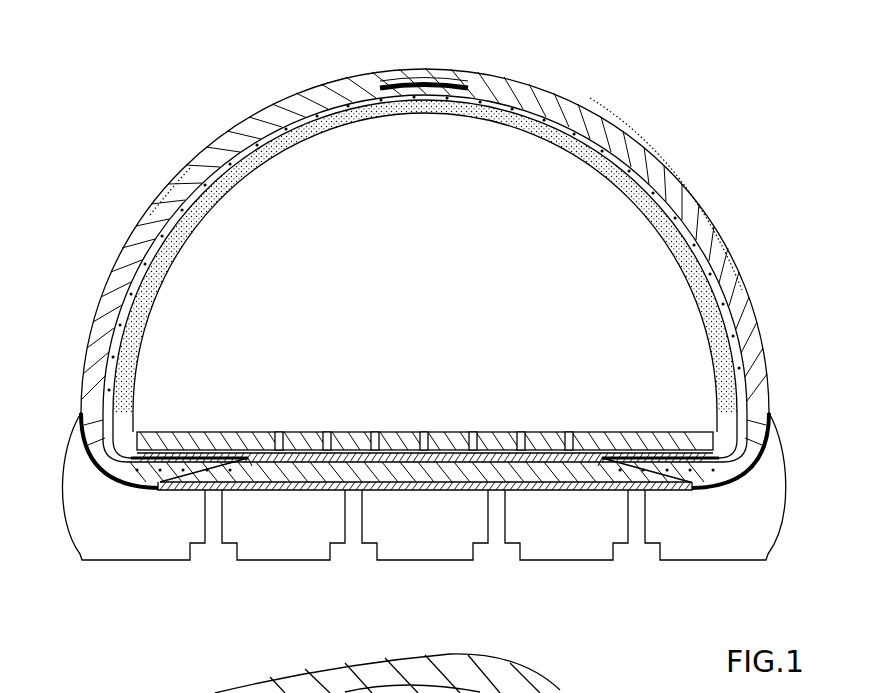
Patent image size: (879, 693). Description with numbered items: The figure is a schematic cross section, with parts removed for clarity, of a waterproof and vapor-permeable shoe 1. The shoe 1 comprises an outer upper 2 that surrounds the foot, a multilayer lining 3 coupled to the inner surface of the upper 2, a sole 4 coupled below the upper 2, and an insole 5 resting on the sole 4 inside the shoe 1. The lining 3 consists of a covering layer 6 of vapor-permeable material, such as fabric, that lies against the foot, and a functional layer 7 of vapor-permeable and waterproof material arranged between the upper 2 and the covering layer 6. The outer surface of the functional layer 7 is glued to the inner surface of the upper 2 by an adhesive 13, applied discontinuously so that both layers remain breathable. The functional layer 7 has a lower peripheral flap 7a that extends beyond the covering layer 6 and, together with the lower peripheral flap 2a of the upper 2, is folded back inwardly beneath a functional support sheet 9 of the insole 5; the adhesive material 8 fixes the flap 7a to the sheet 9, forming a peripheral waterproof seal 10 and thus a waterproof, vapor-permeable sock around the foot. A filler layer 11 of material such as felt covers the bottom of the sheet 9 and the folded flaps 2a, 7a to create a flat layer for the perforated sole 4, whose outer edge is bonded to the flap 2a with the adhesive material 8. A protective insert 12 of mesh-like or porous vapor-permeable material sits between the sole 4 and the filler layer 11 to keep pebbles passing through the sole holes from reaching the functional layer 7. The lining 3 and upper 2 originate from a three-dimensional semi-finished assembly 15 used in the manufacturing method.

The waterproof and vapor-permeable shoe 1 is at (676, 130).
The outer upper 2 is at (513, 78).
The lower peripheral flap of the upper 2a is at (167, 478).
The multilayer lining 3 is at (512, 128).
The sole 4 is at (772, 523).
The insole 5 is at (313, 431).
The covering layer 6 is at (575, 150).
The functional layer 7 is at (612, 165).
The lower peripheral flap of the functional layer 7a is at (217, 470).
The adhesive material 8 is at (433, 86).
The functional support sheet 9 is at (390, 445).
The peripheral waterproof seal 10 is at (250, 465).
The filler layer 11 is at (445, 470).
The protective insert 12 is at (545, 455).
The adhesive 13 is at (165, 200).
The three-dimensional semi-finished piece or assembly 15 is at (398, 83).